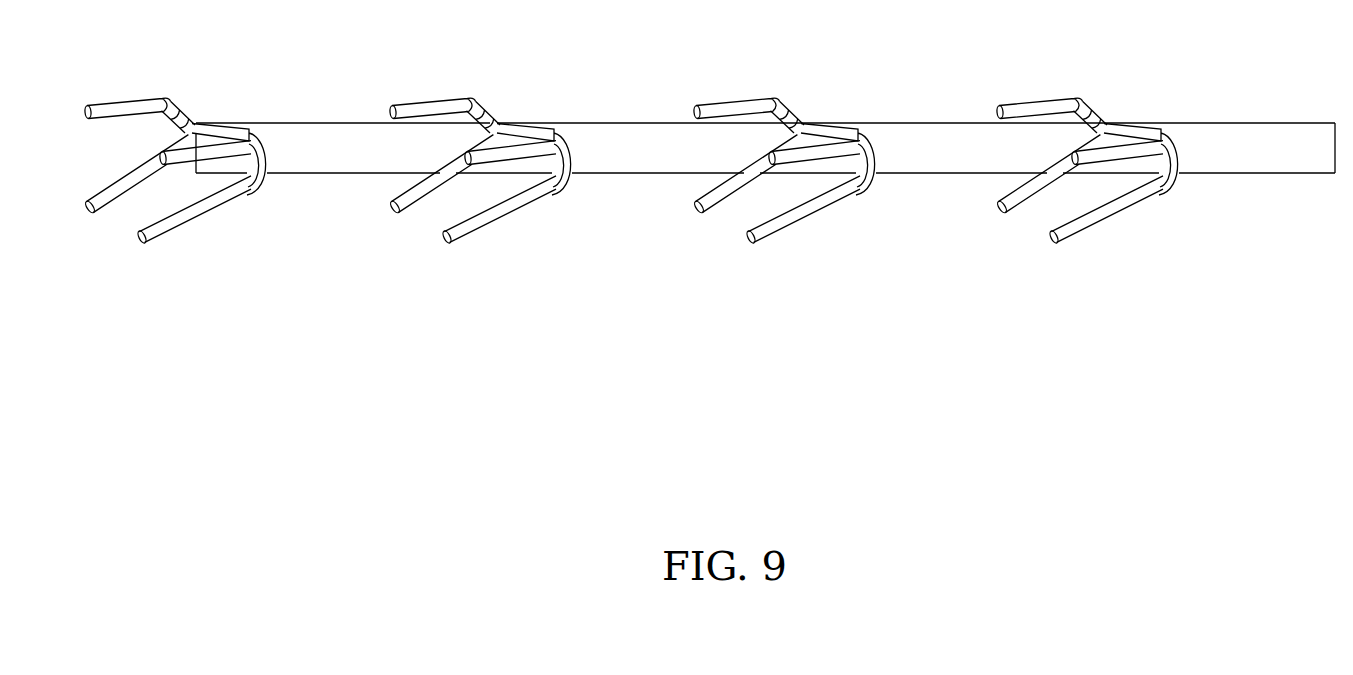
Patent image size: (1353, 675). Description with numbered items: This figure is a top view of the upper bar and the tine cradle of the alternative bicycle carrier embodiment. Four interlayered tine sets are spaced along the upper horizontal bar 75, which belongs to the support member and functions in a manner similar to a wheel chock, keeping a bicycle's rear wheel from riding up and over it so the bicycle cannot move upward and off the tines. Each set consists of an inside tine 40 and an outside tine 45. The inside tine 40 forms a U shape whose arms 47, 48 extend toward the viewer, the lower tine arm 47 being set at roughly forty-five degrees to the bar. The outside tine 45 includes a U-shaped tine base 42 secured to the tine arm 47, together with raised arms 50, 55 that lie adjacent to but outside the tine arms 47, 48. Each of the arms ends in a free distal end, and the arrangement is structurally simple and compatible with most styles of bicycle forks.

The inside tine 40 is at (205, 225).
The tine base 42 is at (867, 197).
The outside tine 45 is at (277, 193).
The tine arm 47 is at (1025, 193).
The tine arm 48 is at (1068, 225).
The raised arm 50 is at (707, 102).
The raised arm 55 is at (788, 152).
The upper horizontal bar 75 is at (1235, 150).